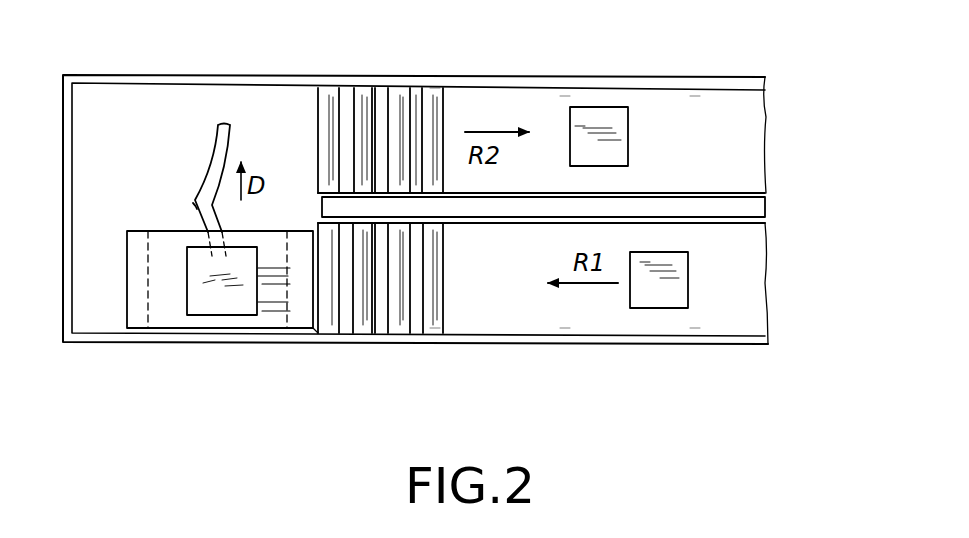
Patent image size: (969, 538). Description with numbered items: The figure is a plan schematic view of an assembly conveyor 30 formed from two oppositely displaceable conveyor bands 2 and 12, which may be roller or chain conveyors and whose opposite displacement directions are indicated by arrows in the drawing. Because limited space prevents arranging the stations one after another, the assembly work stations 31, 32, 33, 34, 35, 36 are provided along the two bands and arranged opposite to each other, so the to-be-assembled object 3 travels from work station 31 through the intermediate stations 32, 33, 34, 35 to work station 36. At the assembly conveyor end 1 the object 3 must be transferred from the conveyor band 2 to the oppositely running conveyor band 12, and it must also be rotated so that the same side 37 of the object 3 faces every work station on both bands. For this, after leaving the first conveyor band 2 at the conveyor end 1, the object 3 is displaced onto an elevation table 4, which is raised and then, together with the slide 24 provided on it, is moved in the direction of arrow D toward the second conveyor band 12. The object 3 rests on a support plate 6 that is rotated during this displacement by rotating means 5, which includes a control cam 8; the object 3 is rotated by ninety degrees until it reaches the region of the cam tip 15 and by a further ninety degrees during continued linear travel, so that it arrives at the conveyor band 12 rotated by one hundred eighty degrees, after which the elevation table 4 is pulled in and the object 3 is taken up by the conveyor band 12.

The assembly conveyor end 1 is at (63, 230).
The conveyor band 2 is at (505, 337).
The to-be-assembled object 3 is at (628, 138).
The elevation table 4 is at (283, 318).
The rotating means 5 is at (186, 298).
The support plate 6 is at (245, 266).
The control cam 8 is at (213, 161).
The conveyor band 12 is at (362, 96).
The cam tip 15 is at (192, 205).
The slide 24 is at (317, 329).
The assembly conveyor 30 is at (792, 217).
The assembly work station 31 is at (703, 413).
The assembly work station 32 is at (573, 419).
The assembly work station 33 is at (446, 414).
The assembly work station 34 is at (449, 40).
The assembly work station 35 is at (583, 46).
The assembly work station 36 is at (706, 45).
The side of the object 37 is at (597, 106).